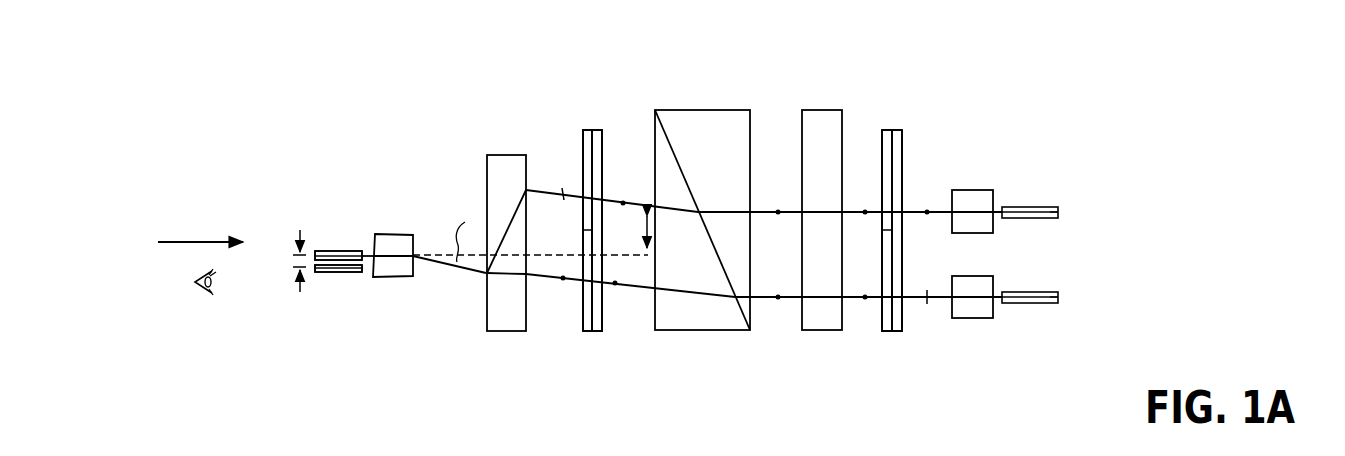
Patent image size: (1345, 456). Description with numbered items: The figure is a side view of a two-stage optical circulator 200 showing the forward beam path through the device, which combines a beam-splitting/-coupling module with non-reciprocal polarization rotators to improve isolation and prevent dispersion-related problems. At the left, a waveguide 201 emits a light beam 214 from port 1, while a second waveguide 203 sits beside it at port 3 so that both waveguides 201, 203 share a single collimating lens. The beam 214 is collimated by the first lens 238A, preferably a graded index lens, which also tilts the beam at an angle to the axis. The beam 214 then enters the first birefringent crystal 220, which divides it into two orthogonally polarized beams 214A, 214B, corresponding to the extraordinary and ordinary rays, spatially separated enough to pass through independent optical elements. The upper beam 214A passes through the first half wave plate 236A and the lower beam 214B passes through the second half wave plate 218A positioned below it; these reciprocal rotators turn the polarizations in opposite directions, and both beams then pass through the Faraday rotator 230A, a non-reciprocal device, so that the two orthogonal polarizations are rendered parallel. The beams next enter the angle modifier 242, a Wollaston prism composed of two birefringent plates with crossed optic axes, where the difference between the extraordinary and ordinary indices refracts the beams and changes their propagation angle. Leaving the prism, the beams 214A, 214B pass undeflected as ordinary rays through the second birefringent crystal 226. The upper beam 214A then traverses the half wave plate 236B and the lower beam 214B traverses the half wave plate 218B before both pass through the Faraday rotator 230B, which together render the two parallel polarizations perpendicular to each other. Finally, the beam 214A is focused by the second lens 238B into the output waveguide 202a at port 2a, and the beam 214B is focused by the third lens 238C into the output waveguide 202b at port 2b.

The circulator 200 is at (336, 119).
The waveguide 201 is at (346, 253).
The waveguide 203 is at (346, 260).
The port 1 is at (317, 247).
The input port 3 is at (317, 277).
The first lens 238A is at (383, 235).
The light beam 214 is at (449, 275).
The first birefringent crystal 220 is at (502, 332).
The beam 214A is at (558, 193).
The beam 214B is at (557, 281).
The first half wave plate 236A is at (588, 130).
The second half wave plate 218A is at (583, 332).
The Faraday rotator 230A is at (598, 345).
The angle modifier 242 is at (718, 332).
The second birefringent crystal 226 is at (813, 332).
The half wave plate 236B is at (888, 130).
The half wave plate 218B is at (887, 332).
The Faraday rotator 230B is at (898, 345).
The second lens 238B is at (972, 190).
The third lens 238C is at (978, 318).
The waveguide 202a is at (1030, 199).
The waveguide 202b is at (1030, 284).
The output port 2a is at (1071, 216).
The output port 2b is at (1071, 301).